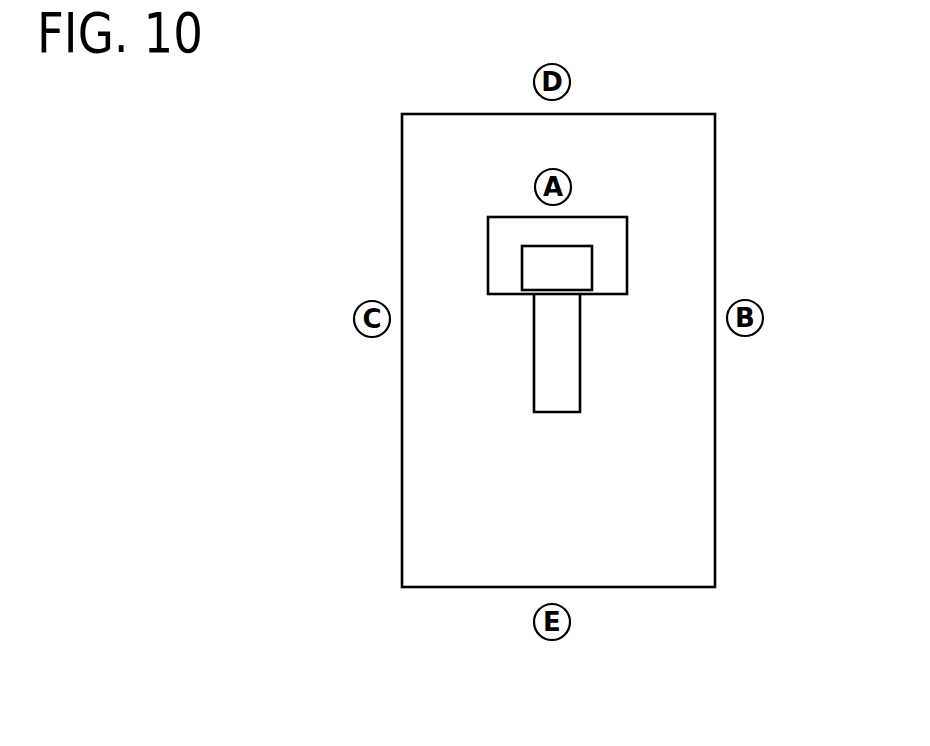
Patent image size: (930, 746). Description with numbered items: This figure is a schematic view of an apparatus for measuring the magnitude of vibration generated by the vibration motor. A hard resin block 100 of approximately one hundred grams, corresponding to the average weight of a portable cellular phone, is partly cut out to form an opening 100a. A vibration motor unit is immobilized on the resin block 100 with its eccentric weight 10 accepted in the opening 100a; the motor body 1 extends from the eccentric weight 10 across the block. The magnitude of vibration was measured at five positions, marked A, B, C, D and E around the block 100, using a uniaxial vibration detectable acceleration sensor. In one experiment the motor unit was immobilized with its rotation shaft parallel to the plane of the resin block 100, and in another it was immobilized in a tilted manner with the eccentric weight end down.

The hard resin block 100 is at (693, 192).
The opening 100a is at (503, 233).
The eccentric weight 10 is at (563, 253).
The lead portion 1 is at (543, 379).